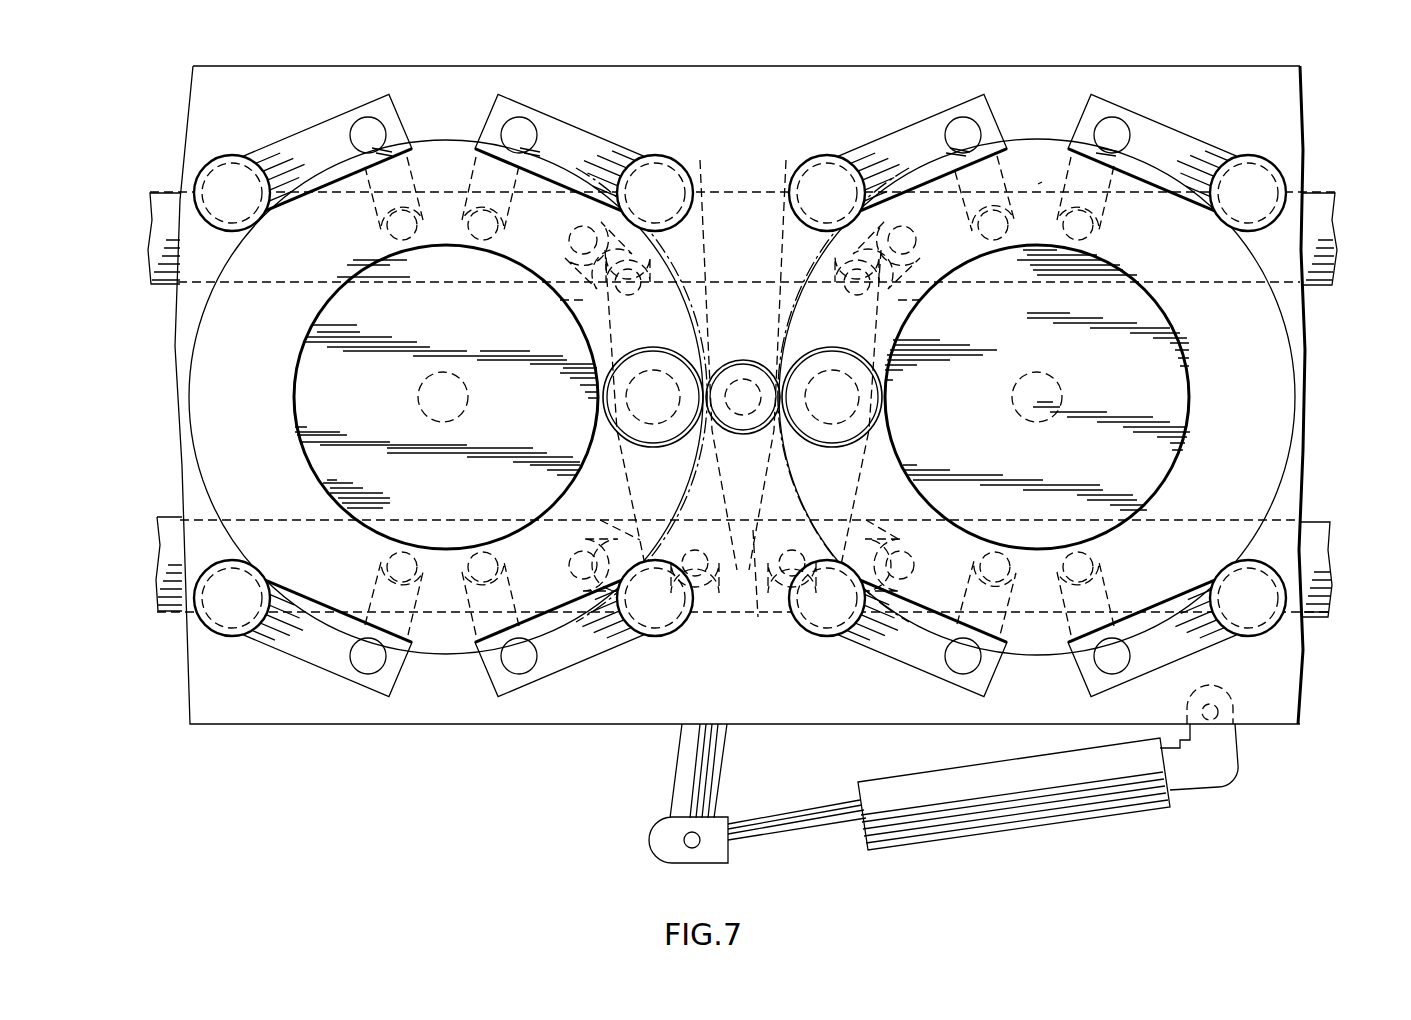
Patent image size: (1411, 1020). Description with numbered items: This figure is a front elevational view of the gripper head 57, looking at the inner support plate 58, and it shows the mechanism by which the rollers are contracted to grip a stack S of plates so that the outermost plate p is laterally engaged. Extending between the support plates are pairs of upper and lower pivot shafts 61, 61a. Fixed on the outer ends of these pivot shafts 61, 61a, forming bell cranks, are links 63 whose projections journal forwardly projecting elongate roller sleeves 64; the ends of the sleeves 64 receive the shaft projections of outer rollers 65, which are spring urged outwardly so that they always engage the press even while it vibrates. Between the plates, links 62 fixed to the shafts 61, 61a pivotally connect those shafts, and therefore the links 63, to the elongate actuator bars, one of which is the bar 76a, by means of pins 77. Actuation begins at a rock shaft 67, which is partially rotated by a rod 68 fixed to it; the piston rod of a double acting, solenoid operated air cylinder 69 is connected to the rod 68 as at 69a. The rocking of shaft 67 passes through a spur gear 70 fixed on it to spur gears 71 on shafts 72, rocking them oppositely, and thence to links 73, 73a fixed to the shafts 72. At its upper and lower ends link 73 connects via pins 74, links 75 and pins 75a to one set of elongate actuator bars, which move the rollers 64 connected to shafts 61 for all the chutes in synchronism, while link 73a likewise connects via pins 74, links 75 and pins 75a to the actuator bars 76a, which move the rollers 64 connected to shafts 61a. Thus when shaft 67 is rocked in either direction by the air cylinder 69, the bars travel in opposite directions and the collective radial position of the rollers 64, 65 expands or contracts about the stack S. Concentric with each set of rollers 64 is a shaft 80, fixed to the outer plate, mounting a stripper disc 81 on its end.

The gripper head 57 is at (1320, 74).
The inner support plate 58 is at (832, 86).
The upper pivot shaft 61 is at (378, 134).
The lower pivot shaft 61a is at (358, 666).
The link 62 is at (478, 206).
The link 63 is at (318, 140).
The roller sleeve 64 is at (226, 220).
The outer roller 65 is at (250, 162).
The rock shaft 67 is at (745, 380).
The rod 68 is at (680, 766).
The air cylinder 69 is at (1020, 815).
The connection 69a is at (700, 850).
The spur gear 70 is at (716, 356).
The spur gear 71 is at (650, 370).
The shaft 72 is at (640, 384).
The link 73 is at (628, 466).
The link 73a is at (892, 470).
The pin 74 is at (652, 270).
The link 75 is at (585, 302).
The pin 75a is at (566, 270).
The actuator bar 76a is at (1314, 196).
The pin 77 is at (446, 246).
The shaft 80 is at (418, 399).
The stripper disc 81 is at (450, 349).
The stack S is at (192, 346).
The outermost plate p is at (180, 472).